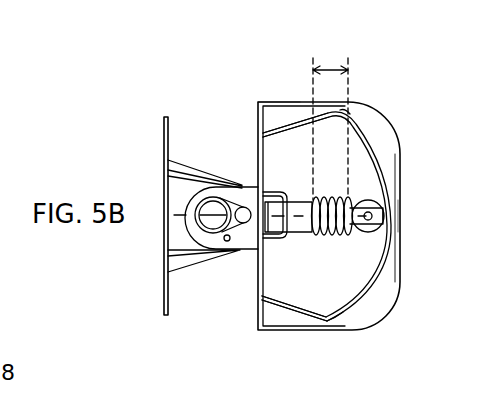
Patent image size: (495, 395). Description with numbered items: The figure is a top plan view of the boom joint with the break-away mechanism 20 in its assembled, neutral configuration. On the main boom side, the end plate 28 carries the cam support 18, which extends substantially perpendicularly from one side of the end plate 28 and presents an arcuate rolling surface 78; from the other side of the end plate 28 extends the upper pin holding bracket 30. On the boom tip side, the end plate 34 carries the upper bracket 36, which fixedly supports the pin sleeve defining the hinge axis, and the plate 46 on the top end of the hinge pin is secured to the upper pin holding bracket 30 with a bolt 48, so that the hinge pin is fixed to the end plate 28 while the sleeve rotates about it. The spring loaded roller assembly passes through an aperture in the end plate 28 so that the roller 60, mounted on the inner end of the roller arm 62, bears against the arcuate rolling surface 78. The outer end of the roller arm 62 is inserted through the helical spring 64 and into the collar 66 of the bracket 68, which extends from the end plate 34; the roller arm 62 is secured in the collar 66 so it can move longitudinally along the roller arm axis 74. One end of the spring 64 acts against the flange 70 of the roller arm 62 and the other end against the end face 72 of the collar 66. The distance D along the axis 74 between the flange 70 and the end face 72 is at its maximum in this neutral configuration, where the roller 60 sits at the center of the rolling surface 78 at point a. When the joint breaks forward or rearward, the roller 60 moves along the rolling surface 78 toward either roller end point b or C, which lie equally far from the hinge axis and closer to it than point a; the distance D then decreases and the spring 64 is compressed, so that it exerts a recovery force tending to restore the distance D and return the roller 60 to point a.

The cam support 18 is at (373, 130).
The break-away mechanism 20 is at (278, 71).
The end plate 28 is at (257, 312).
The upper pin holding bracket 30 is at (245, 192).
The end plate 34 is at (165, 127).
The upper bracket 36 is at (180, 192).
The plate 46 is at (213, 255).
The bolt 48 is at (245, 223).
The roller 60 is at (370, 200).
The roller arm 62 is at (328, 200).
The helical spring 64 is at (333, 233).
The collar 66 is at (296, 200).
The bracket 68 is at (283, 239).
The flange 70 is at (388, 236).
The end face 72 is at (310, 250).
The roller arm axis 74 is at (421, 221).
The arcuate rolling surface 78 is at (372, 178).
The distance D is at (338, 68).
The point a is at (393, 222).
The roller end point b is at (347, 116).
The roller end point c C is at (343, 321).